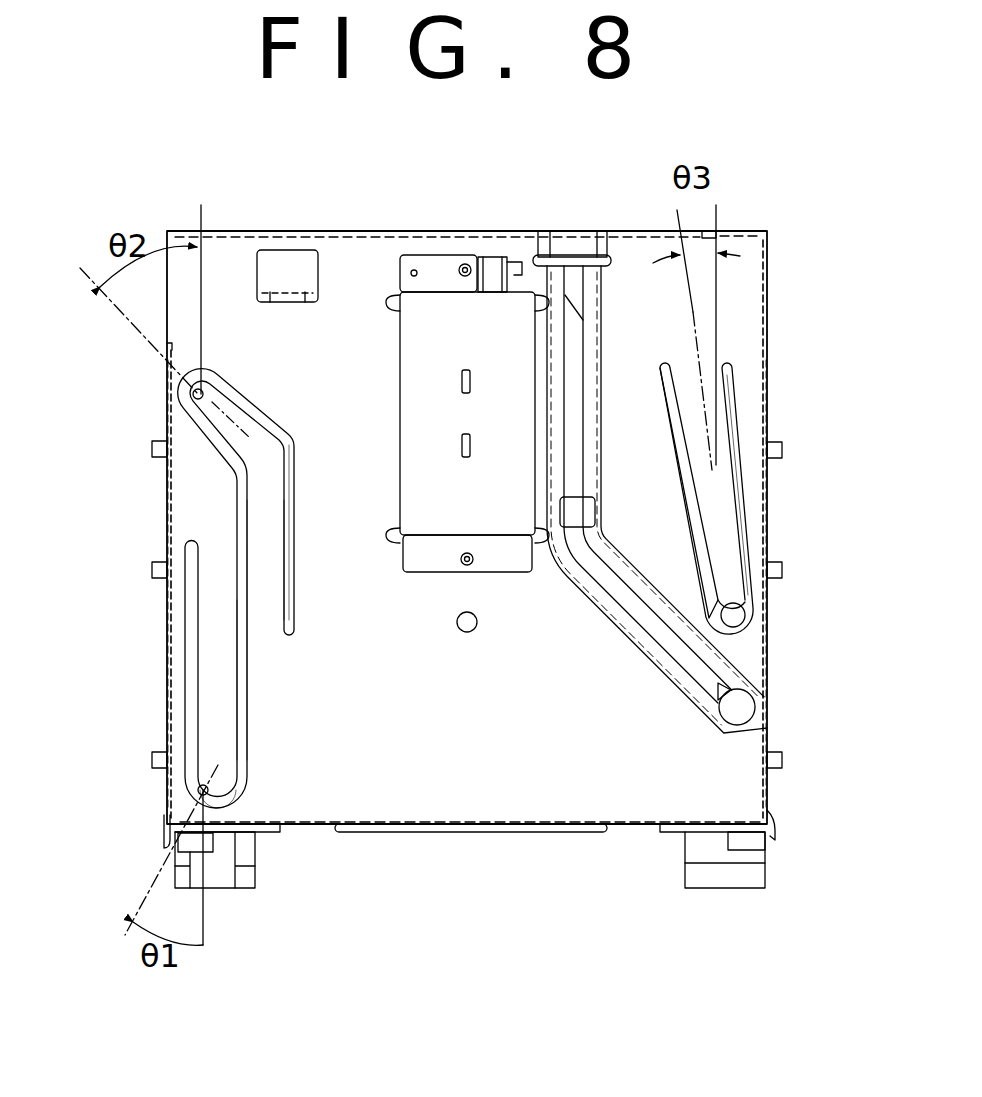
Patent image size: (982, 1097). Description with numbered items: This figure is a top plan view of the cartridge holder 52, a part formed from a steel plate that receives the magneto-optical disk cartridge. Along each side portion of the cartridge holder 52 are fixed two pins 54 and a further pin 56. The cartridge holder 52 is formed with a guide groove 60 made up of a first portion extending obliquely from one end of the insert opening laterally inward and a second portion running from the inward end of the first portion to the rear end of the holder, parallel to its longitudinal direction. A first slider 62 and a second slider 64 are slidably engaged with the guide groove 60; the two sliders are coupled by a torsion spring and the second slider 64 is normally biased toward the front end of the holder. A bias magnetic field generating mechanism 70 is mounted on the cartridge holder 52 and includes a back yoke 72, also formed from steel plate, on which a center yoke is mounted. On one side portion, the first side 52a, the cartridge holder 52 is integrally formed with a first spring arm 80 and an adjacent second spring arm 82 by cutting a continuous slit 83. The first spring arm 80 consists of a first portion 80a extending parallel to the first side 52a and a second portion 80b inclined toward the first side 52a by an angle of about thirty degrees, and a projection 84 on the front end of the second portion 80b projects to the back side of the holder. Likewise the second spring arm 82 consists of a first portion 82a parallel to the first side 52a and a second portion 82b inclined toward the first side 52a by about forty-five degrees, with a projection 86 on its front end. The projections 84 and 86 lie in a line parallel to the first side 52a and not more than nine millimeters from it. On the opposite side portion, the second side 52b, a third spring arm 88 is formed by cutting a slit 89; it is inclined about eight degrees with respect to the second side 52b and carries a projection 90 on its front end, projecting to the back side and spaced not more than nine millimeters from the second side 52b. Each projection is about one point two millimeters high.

The cartridge holder 52 is at (750, 268).
The first side 52a is at (163, 497).
The second side 52b is at (767, 386).
The pins 54 is at (155, 448).
The pin 56 is at (155, 569).
The guide groove 60 is at (640, 620).
The first slider 62 is at (735, 712).
The second slider 64 is at (582, 517).
The bias magnetic field generating mechanism 70 is at (456, 250).
The back yoke 72 is at (442, 528).
The first spring arm 80 is at (193, 696).
The first portion 80a is at (230, 712).
The second portion 80b is at (223, 783).
The second spring arm 82 is at (287, 432).
The first portion 82a is at (278, 527).
The second portion 82b is at (225, 412).
The continuous slit 83 is at (245, 650).
The projection 84 is at (196, 792).
The projection 86 is at (192, 392).
The third spring arm 88 is at (745, 505).
The slit 89 is at (730, 385).
The projection 90 is at (745, 615).